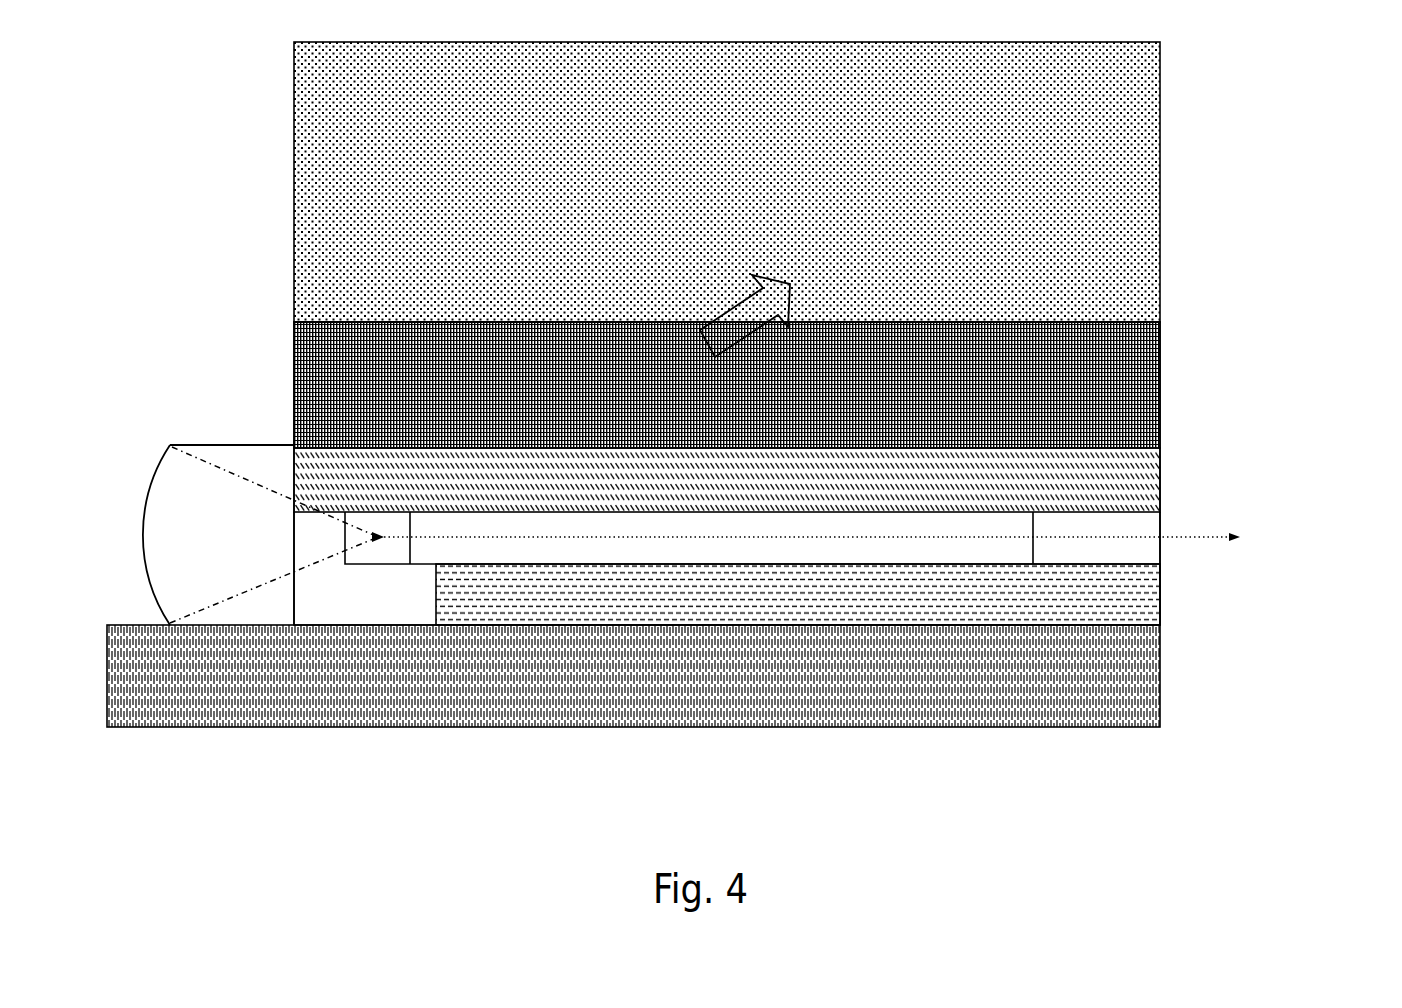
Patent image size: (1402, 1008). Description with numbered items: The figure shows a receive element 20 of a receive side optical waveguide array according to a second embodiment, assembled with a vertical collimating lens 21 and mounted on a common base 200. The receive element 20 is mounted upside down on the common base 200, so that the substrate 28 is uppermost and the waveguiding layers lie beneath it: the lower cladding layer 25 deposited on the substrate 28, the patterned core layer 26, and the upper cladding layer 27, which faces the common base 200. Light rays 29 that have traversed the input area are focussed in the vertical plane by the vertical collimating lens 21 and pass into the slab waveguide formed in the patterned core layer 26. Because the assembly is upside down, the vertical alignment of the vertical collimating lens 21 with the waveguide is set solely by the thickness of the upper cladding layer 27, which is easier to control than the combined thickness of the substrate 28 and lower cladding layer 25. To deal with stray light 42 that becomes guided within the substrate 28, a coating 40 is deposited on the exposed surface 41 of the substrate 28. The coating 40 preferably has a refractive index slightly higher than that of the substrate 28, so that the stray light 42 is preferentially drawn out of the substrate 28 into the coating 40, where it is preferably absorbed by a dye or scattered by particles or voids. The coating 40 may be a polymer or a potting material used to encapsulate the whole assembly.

The receive element 20 is at (1240, 397).
The vertical collimating lens 21 is at (195, 437).
The lower cladding layer 25 is at (1167, 478).
The patterned core layer 26 is at (1167, 525).
The upper cladding layer 27 is at (1167, 600).
The substrate 28 is at (1163, 360).
The light rays 29 is at (165, 445).
The coating 40 is at (1143, 207).
The exposed surface 41 is at (318, 317).
The stray light 42 is at (766, 300).
The common base 200 is at (1170, 677).